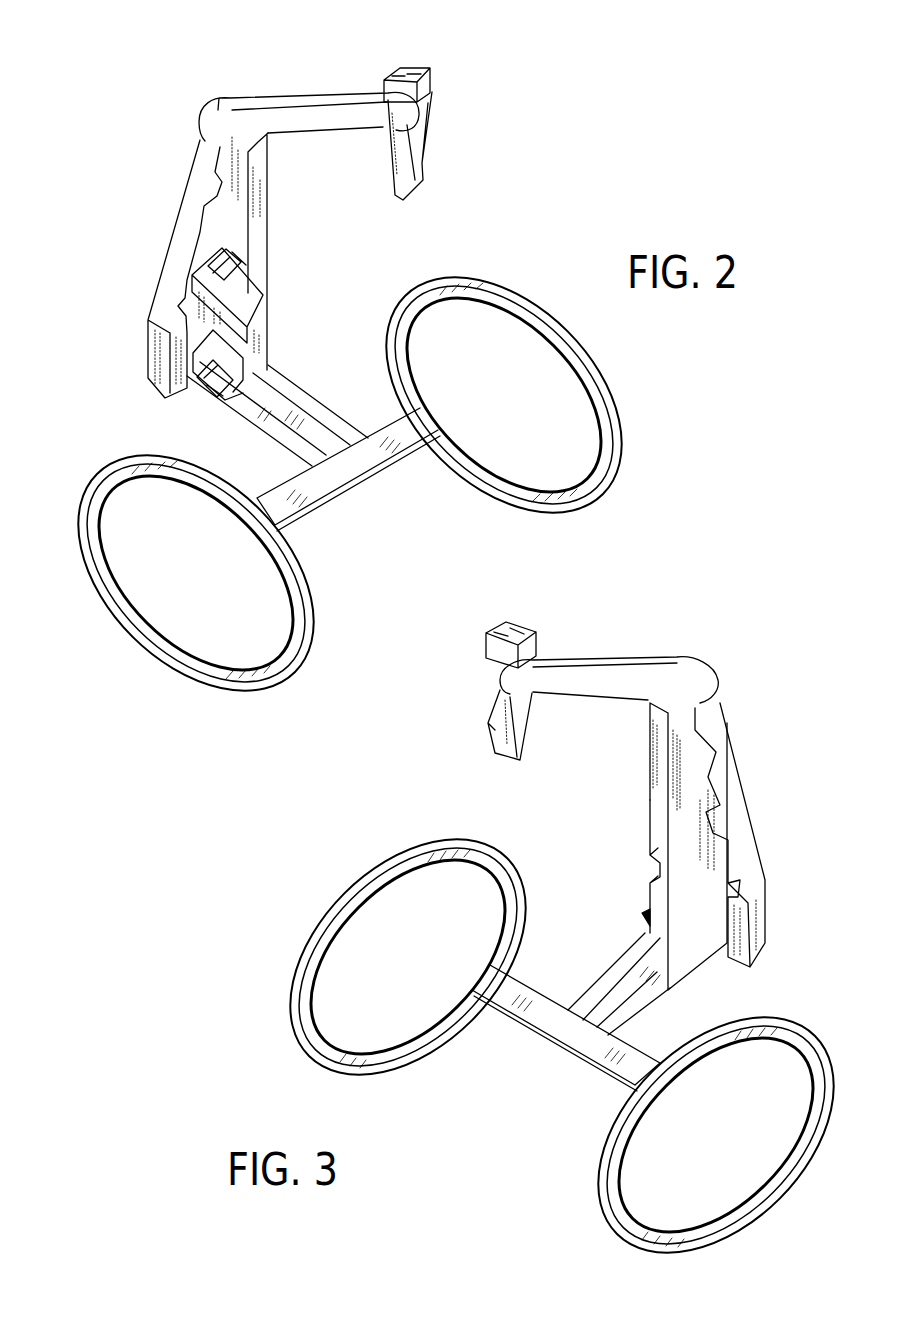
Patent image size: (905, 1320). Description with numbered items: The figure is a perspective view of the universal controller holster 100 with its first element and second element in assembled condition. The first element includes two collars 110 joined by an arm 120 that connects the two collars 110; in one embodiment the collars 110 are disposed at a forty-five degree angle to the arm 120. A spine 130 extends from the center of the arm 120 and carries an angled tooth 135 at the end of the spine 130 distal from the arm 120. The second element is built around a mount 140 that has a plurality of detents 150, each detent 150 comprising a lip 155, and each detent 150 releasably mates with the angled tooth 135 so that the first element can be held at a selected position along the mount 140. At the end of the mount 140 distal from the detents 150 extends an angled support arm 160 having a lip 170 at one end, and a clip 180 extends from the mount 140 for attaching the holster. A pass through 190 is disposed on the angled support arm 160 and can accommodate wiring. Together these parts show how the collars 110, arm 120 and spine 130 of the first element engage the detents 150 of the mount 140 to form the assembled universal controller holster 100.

In FIG. 2, the universal controller holster 100 is at (129, 159).
In FIG. 3, the universal controller holster 100 is at (760, 700).
In FIG. 2, the collar 110 is at (403, 612).
In FIG. 3, the collar 110 is at (610, 1146).
In FIG. 2, the arm 120 is at (330, 473).
In FIG. 3, the arm 120 is at (608, 982).
In FIG. 2, the spine 130 is at (297, 420).
In FIG. 3, the spine 130 is at (625, 990).
In FIG. 2, the angled tooth 135 is at (208, 387).
In FIG. 3, the angled tooth 135 is at (642, 918).
In FIG. 2, the mount 140 is at (232, 227).
In FIG. 3, the mount 140 is at (688, 846).
In FIG. 2, the detent 150 is at (263, 357).
In FIG. 3, the detent 150 is at (645, 920).
In FIG. 2, the lip 155 is at (225, 263).
In FIG. 2, the angled support arm 160 is at (295, 112).
In FIG. 3, the angled support arm 160 is at (620, 683).
In FIG. 2, the lip 170 is at (427, 158).
In FIG. 3, the lip 170 is at (500, 723).
In FIG. 2, the clip 180 is at (163, 287).
In FIG. 3, the clip 180 is at (730, 785).
In FIG. 2, the pass through 190 is at (432, 73).
In FIG. 3, the pass through 190 is at (527, 637).